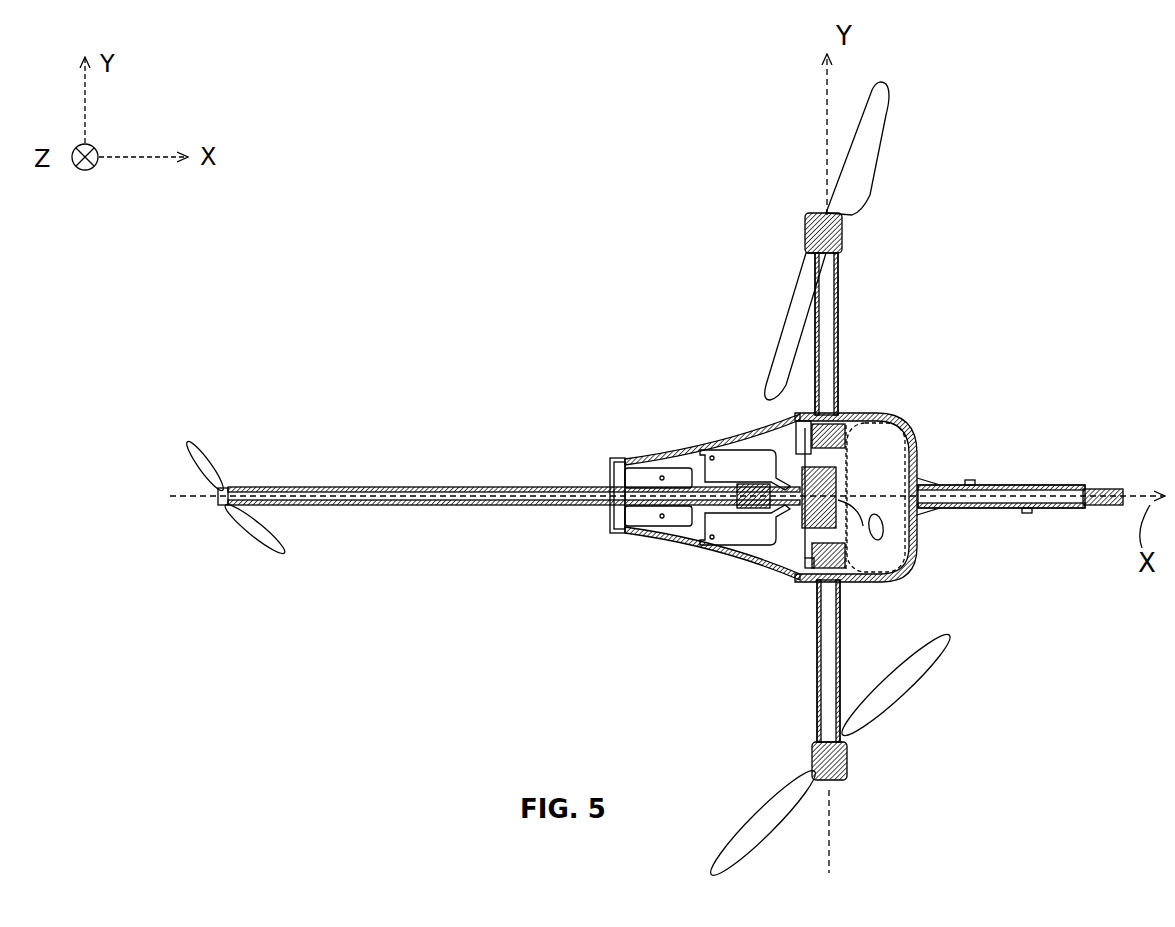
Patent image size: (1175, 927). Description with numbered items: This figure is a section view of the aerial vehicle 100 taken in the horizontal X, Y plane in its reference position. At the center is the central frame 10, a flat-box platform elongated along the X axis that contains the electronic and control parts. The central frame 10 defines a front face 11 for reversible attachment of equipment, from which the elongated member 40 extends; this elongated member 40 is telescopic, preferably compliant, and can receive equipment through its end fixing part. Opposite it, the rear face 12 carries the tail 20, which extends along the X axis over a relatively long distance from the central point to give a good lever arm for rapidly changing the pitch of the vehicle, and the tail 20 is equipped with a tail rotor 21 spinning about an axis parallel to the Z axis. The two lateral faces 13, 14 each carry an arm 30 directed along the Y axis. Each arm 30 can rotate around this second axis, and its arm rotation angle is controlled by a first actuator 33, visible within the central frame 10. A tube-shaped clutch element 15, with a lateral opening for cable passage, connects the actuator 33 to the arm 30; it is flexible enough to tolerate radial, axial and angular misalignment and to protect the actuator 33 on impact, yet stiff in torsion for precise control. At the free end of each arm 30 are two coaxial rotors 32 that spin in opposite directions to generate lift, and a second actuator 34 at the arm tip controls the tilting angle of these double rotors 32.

The central frame 10 is at (914, 394).
The front face 11 is at (920, 457).
The rear face 12 is at (612, 470).
The lateral face 13 is at (692, 448).
The lateral face 14 is at (703, 560).
The clutch element 15 is at (804, 565).
The tail 20 is at (410, 506).
The tail rotor 21 is at (223, 475).
The arm 30 is at (830, 313).
The coaxial rotor 32 is at (870, 165).
The first actuator 33 is at (803, 462).
The second actuator 34 is at (802, 233).
The elongated member 40 is at (1003, 503).
The aerial vehicle 100 is at (276, 724).